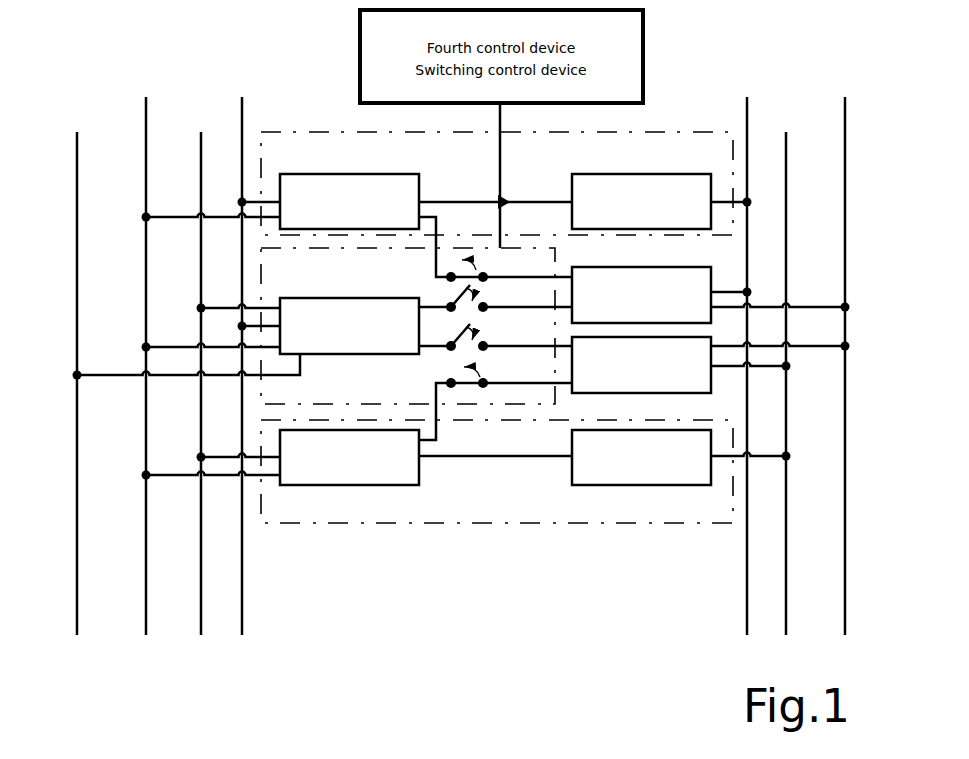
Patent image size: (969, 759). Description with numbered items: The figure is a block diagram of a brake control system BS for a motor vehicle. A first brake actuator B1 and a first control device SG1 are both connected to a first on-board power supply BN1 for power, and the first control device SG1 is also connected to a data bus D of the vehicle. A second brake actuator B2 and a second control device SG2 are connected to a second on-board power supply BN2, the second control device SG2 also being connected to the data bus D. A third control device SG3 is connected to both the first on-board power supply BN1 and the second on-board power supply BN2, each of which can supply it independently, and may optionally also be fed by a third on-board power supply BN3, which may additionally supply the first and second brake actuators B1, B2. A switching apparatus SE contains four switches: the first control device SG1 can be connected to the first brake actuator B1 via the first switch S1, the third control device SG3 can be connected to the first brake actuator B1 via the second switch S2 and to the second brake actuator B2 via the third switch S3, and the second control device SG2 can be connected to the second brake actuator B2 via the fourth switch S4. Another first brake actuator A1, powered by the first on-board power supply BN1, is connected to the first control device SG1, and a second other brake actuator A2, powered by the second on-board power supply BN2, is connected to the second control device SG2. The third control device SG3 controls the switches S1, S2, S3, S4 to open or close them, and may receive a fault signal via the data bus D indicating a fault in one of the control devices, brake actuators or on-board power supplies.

The first on-board power supply BN1 is at (494, 348).
The second on-board power supply BN2 is at (495, 367).
The third on-board power supply BN3 is at (461, 348).
The data bus D is at (149, 348).
The brake control system BS is at (370, 548).
The switching apparatus SE is at (453, 262).
The first switch S1 is at (485, 266).
The second switch S2 is at (485, 296).
The third switch S3 is at (485, 335).
The fourth switch S4 is at (485, 371).
The first control device SG1 is at (349, 201).
The second control device SG2 is at (349, 457).
The third control device SG3 is at (349, 326).
The other first brake actuator A1 is at (641, 201).
The second other brake actuator A2 is at (641, 457).
The first brake actuator B1 is at (641, 295).
The second brake actuator B2 is at (641, 365).